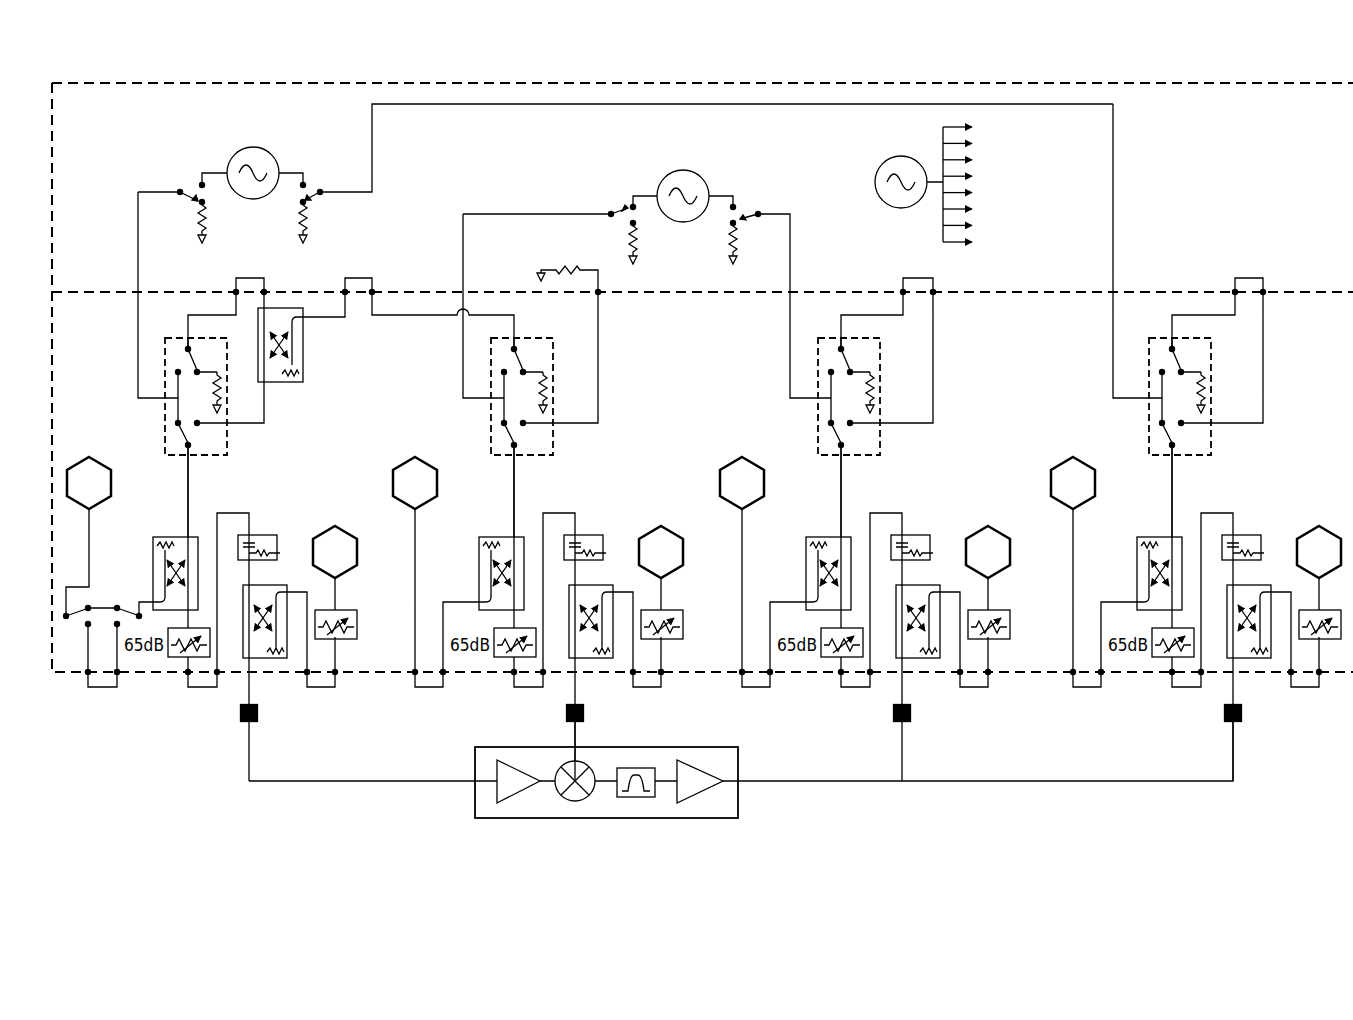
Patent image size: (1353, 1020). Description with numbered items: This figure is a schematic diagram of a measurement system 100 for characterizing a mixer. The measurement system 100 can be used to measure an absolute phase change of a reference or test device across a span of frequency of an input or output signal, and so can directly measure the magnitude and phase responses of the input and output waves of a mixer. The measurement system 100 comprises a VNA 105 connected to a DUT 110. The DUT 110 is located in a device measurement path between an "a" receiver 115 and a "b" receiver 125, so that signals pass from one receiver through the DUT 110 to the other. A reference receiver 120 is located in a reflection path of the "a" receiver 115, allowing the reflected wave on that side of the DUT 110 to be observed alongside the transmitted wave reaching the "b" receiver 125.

The measurement system 100 is at (114, 53).
The VNA 105 is at (1218, 83).
The DUT 110 is at (475, 760).
The "a" receiver 115 is at (415, 457).
The reference receiver 120 is at (89, 457).
The "b" receiver 125 is at (1319, 526).